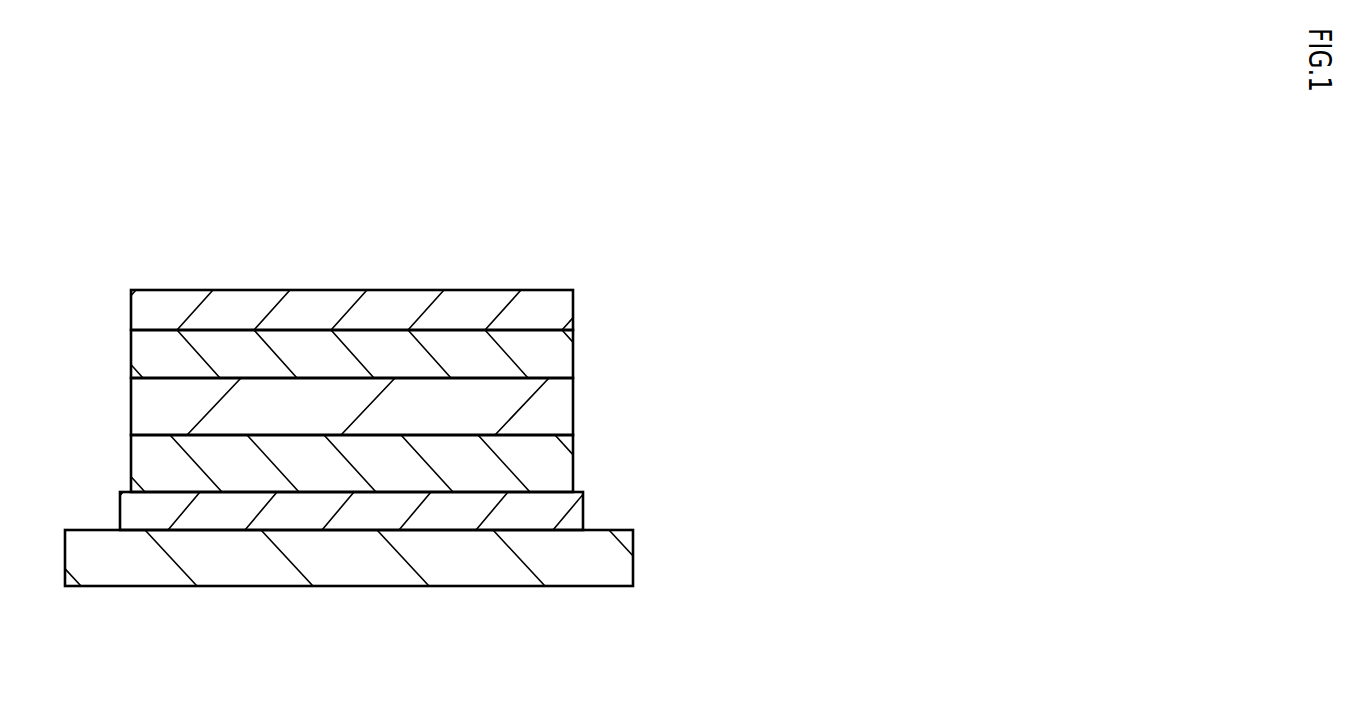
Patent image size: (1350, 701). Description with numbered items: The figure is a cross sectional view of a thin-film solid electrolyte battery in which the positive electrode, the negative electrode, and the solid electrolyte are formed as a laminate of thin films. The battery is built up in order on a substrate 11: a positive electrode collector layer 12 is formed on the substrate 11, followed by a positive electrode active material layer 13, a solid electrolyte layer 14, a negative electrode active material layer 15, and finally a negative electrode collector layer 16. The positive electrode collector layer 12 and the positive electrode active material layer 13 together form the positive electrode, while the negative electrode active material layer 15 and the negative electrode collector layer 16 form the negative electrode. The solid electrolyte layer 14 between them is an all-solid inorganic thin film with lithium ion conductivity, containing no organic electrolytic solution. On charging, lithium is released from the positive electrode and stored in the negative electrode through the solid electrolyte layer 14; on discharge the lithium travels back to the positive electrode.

The substrate 11 is at (633, 560).
The positive electrode collector layer 12 is at (583, 512).
The positive electrode active material layer 13 is at (573, 466).
The solid electrolyte layer 14 is at (573, 408).
The negative electrode active material layer 15 is at (573, 356).
The negative electrode collector layer 16 is at (573, 310).